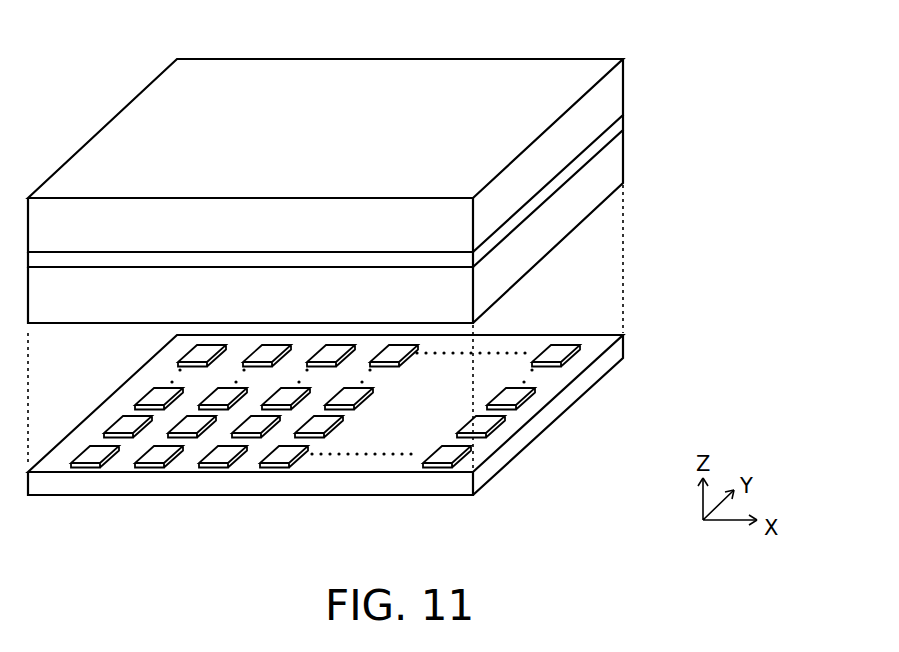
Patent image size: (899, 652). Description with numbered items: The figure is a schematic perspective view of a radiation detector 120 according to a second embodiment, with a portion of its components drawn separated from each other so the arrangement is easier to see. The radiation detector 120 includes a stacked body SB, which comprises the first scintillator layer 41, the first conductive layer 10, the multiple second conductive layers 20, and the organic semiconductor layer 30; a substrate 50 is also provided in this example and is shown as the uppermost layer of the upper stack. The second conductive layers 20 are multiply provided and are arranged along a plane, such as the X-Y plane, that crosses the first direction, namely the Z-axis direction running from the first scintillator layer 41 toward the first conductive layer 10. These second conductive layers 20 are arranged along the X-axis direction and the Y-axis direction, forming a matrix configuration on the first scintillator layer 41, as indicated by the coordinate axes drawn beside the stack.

The radiation detector 120 is at (709, 82).
The stacked body SB is at (693, 108).
The substrate 50 is at (623, 91).
The first conductive layer 10 is at (621, 129).
The organic semiconductor layer 30 is at (623, 172).
The first scintillator layer 41 is at (623, 350).
The second conductive layer 20 is at (92, 454).